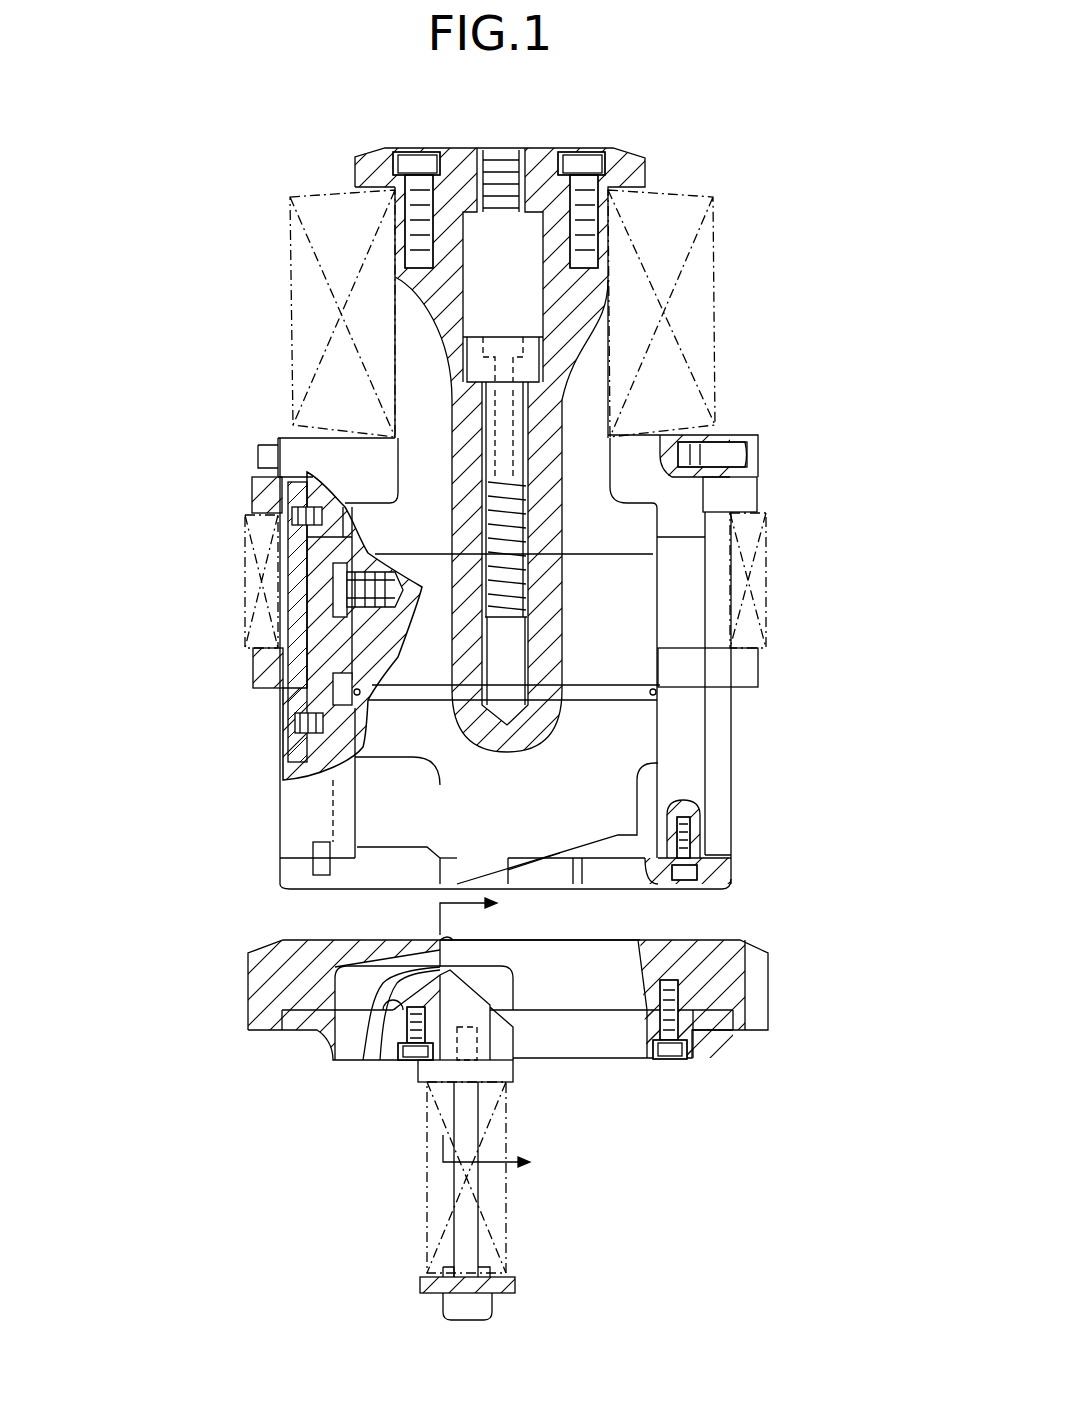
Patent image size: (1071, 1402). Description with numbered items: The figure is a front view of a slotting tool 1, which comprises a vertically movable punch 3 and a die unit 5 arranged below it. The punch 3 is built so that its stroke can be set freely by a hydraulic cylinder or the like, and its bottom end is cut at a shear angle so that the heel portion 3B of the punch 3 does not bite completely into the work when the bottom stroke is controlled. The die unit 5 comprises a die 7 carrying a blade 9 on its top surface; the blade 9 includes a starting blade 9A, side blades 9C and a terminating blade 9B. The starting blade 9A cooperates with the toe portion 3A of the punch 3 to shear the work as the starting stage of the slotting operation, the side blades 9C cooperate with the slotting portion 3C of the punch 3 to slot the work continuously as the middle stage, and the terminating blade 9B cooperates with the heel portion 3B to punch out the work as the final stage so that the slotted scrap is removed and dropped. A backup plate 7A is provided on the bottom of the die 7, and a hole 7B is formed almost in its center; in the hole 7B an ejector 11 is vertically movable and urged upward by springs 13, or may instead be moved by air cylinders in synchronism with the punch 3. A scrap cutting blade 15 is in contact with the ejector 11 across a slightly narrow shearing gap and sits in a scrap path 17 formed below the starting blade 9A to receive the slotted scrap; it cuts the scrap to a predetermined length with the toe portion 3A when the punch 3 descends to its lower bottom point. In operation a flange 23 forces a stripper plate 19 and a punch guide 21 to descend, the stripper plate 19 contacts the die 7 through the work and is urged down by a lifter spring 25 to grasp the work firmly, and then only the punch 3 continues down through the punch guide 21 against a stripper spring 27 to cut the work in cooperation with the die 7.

The slotting tool 1 is at (803, 748).
The punch 3 is at (617, 756).
The toe portion 3A is at (460, 863).
The heel portion 3B is at (623, 798).
The slotting portion 3C is at (518, 853).
The die unit 5 is at (753, 1040).
The die 7 is at (257, 985).
The backup plate 7A is at (713, 1027).
The hole 7B is at (643, 1027).
The blade 9 is at (658, 948).
The starting blade 9A is at (453, 943).
The terminating blade 9B is at (642, 950).
The side blades 9C is at (555, 963).
The ejector 11 is at (477, 983).
The springs 13 is at (507, 1210).
The scrap cutting blade 15 is at (403, 990).
The scrap path 17 is at (387, 990).
The stripper plate 19 is at (290, 873).
The punch guide 21 is at (293, 825).
The flange 23 is at (760, 490).
The lifter spring 25 is at (245, 575).
The stripper spring 27 is at (715, 262).